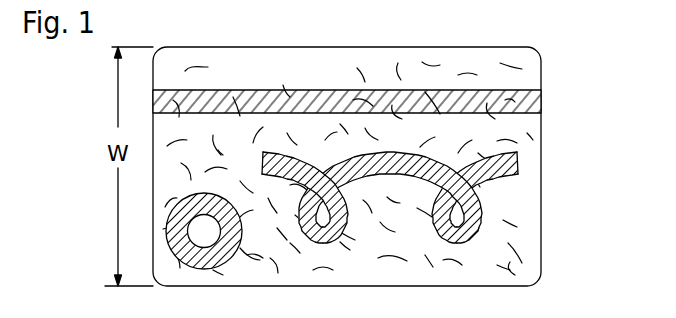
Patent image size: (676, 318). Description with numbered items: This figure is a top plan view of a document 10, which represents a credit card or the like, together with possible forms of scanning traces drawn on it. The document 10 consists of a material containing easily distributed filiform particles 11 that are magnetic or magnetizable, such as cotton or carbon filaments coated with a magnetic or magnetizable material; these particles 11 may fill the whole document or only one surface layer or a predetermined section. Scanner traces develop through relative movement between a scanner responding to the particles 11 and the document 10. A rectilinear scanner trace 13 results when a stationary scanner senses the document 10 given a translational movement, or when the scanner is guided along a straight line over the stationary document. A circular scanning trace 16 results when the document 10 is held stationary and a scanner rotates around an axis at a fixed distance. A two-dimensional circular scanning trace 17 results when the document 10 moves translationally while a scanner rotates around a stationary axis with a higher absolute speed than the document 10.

The document 10 is at (527, 279).
The filiform particles 11 is at (236, 82).
The rectilinear scanner trace 13 is at (533, 101).
The circular scanning trace 16 is at (230, 259).
The two-dimensional circular scanning trace 17 is at (522, 172).